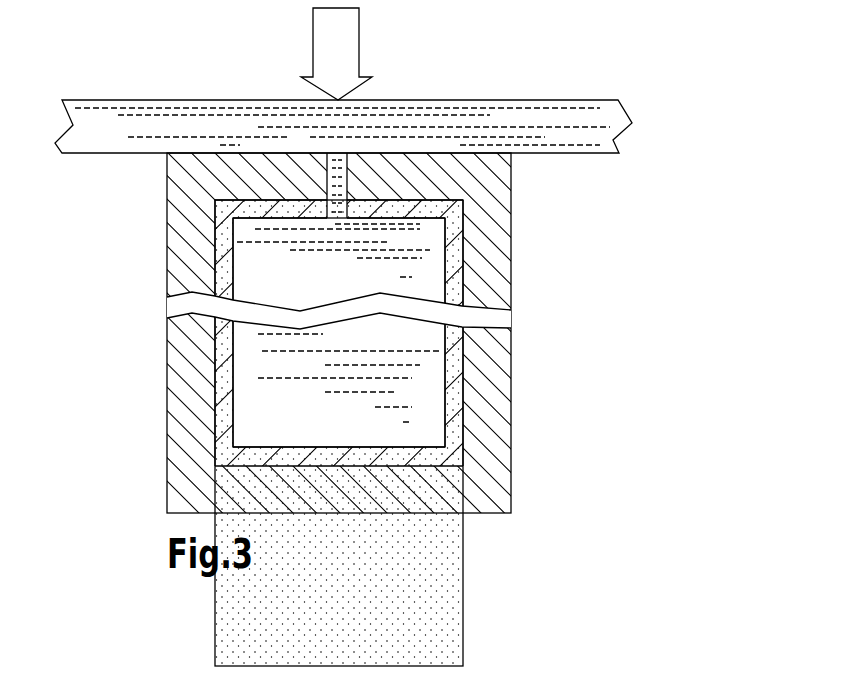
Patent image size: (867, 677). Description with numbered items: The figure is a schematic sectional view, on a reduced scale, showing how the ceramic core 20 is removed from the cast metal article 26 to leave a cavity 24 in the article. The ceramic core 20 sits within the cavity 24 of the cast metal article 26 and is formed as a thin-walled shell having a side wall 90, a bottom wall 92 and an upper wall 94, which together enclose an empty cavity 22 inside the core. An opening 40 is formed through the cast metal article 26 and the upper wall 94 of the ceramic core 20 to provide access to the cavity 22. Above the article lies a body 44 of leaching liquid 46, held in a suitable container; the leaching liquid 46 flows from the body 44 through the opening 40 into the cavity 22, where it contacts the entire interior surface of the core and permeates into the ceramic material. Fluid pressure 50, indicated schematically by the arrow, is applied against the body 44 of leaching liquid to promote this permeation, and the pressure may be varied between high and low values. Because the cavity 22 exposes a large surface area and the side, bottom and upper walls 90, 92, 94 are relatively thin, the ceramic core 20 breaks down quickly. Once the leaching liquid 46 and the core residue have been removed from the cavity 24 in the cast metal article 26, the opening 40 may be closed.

The ceramic core 20 is at (433, 338).
The cavity 22 is at (455, 374).
The cavity in the cast metal article 24 is at (433, 338).
The cast metal article 26 is at (490, 462).
The opening 40 is at (343, 178).
The body of leaching liquid 44 is at (162, 125).
The leaching liquid 46 is at (262, 275).
The fluid pressure 50 is at (340, 45).
The side wall 90 is at (232, 387).
The bottom wall 92 is at (380, 463).
The upper wall 94 is at (258, 208).